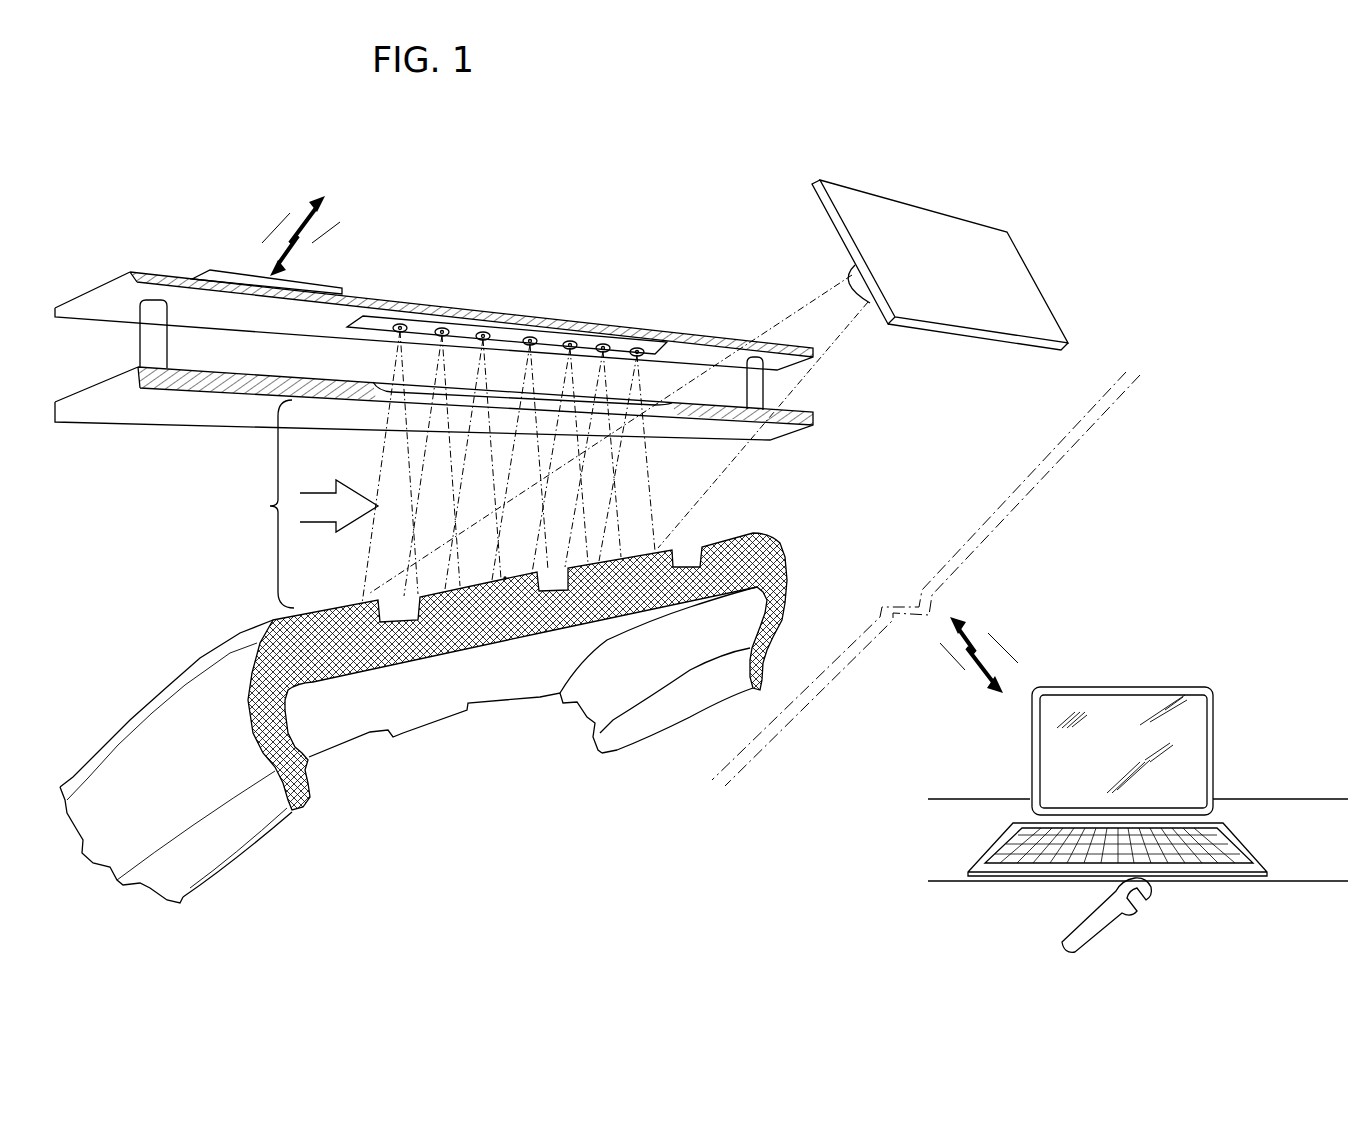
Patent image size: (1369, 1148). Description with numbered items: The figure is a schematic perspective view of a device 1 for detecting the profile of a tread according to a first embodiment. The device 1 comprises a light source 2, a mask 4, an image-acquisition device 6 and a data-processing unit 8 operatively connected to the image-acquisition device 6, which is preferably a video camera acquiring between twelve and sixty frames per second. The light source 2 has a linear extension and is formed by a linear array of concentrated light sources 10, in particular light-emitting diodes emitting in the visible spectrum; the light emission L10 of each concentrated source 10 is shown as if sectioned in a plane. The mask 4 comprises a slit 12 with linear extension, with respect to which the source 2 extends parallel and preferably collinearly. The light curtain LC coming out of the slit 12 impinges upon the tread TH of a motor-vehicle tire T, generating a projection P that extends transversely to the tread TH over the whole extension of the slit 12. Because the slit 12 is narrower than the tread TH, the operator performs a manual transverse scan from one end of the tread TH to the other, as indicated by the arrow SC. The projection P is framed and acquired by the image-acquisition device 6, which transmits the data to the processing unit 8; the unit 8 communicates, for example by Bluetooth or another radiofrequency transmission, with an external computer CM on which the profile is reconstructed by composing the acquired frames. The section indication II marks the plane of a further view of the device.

The device for detecting a profile of a tread 1 is at (730, 176).
The light source 2 is at (672, 350).
The mask 4 is at (241, 412).
The image-acquisition device 6 is at (985, 214).
The data-processing unit 8 is at (237, 270).
The concentrated light sources 10 is at (483, 332).
The slit 12 is at (390, 388).
The light emission L10 is at (643, 388).
The light curtain LC is at (545, 545).
The arrow indicating manual transverse scan SC is at (340, 523).
The projection P is at (505, 578).
The tread TH is at (780, 528).
The motor-vehicle tire T is at (460, 698).
The external computer CM is at (1168, 688).
The section line II is at (175, 528).